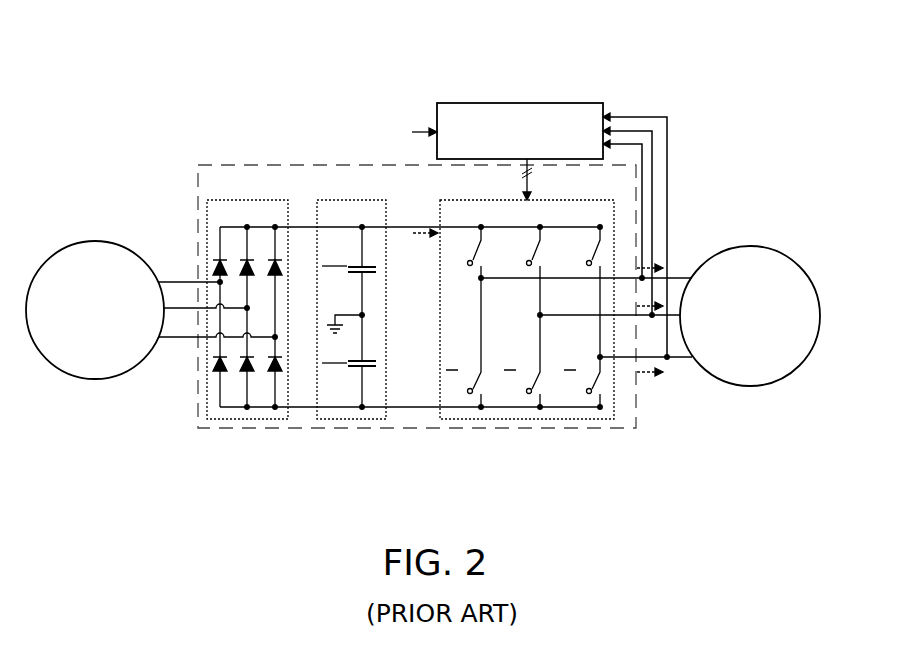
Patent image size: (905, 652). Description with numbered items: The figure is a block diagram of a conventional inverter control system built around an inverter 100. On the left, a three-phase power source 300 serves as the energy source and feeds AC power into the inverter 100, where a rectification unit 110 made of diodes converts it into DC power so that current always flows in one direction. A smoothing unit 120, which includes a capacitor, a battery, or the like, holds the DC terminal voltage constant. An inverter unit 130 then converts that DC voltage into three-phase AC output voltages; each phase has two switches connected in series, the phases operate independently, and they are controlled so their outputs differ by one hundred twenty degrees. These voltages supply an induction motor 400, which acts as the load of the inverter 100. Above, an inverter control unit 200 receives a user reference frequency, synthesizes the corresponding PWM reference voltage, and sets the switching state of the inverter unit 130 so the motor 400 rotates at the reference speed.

The inverter 100 is at (286, 165).
The rectification unit 110 is at (245, 200).
The smoothing unit 120 is at (348, 200).
The inverter unit 130 is at (471, 420).
The inverter control unit 200 is at (530, 102).
The three-phase power source 300 is at (97, 241).
The motor 400 is at (752, 246).